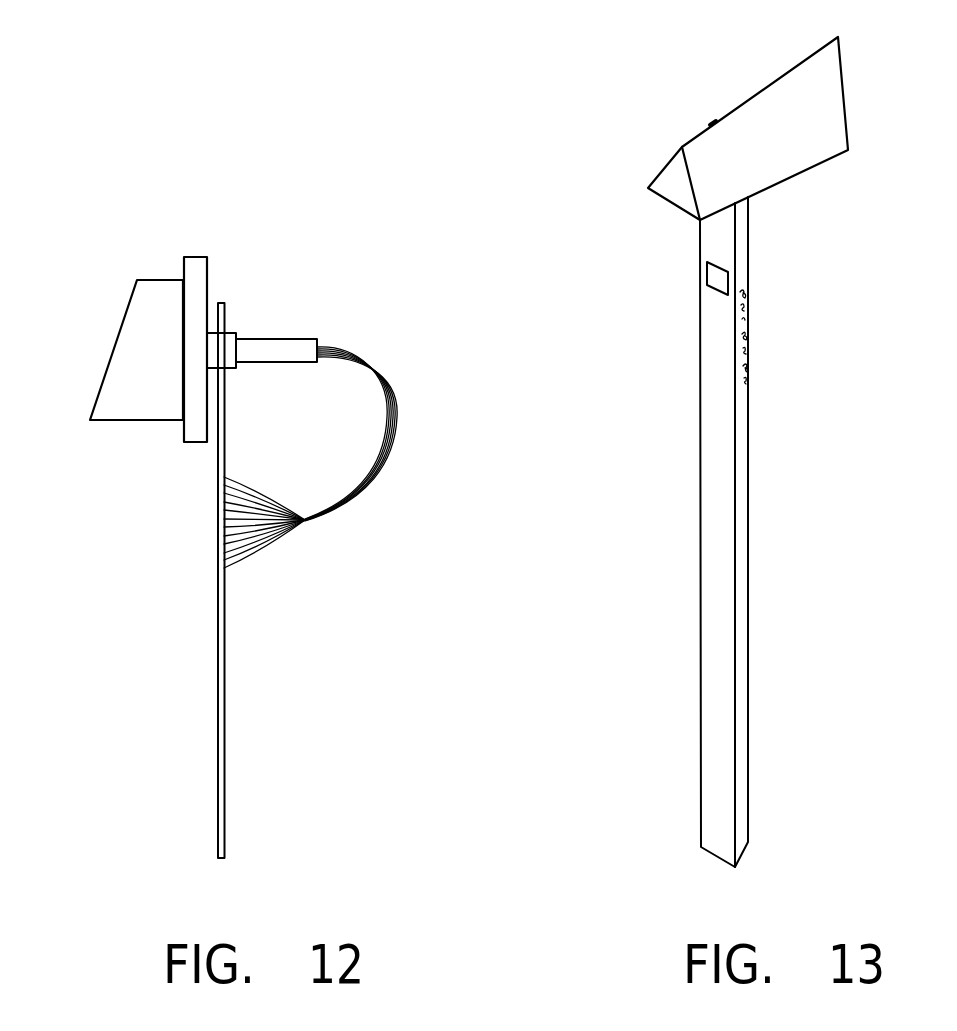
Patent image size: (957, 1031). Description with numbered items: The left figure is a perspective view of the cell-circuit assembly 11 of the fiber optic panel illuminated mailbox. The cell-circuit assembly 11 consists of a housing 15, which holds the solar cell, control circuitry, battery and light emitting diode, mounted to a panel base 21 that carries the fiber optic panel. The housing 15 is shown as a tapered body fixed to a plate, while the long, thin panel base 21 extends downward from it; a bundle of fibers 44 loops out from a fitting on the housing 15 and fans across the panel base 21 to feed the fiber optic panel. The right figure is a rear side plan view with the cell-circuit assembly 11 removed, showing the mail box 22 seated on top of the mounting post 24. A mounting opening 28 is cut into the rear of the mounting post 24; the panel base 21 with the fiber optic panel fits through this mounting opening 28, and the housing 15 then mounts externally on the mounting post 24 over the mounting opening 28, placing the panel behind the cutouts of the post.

In FIG. 12, the cell-circuit assembly 11 is at (140, 546).
In FIG. 12, the housing 15 is at (138, 405).
In FIG. 12, the panel base 21 is at (224, 660).
In FIG. 12, the fiber optic bundle 44 is at (357, 348).
In FIG. 13, the mail box 22 is at (743, 200).
In FIG. 13, the mounting post 24 is at (713, 240).
In FIG. 13, the mounting opening 28 is at (718, 278).